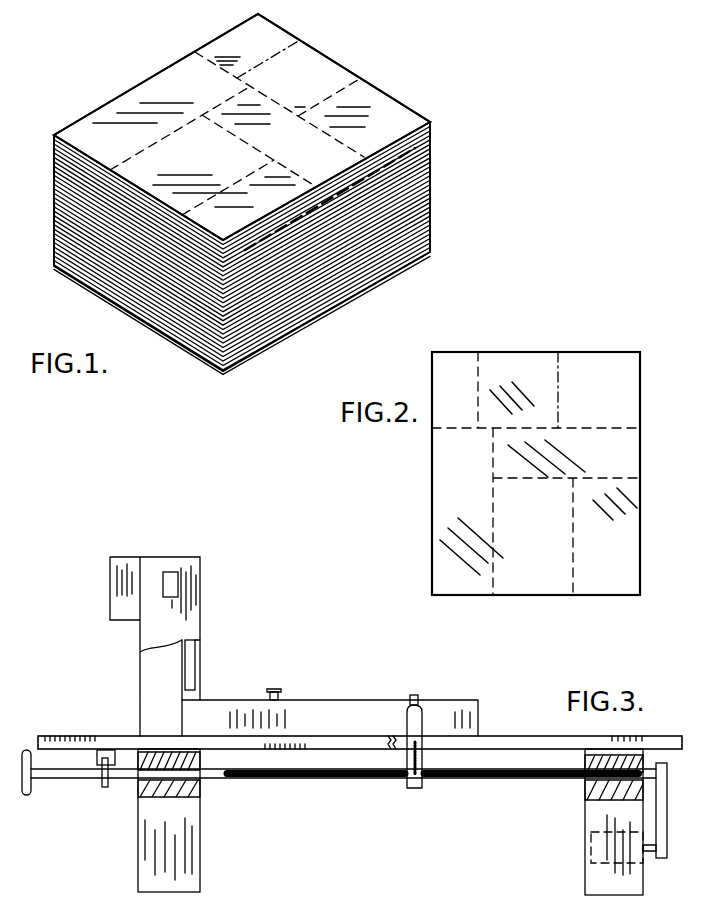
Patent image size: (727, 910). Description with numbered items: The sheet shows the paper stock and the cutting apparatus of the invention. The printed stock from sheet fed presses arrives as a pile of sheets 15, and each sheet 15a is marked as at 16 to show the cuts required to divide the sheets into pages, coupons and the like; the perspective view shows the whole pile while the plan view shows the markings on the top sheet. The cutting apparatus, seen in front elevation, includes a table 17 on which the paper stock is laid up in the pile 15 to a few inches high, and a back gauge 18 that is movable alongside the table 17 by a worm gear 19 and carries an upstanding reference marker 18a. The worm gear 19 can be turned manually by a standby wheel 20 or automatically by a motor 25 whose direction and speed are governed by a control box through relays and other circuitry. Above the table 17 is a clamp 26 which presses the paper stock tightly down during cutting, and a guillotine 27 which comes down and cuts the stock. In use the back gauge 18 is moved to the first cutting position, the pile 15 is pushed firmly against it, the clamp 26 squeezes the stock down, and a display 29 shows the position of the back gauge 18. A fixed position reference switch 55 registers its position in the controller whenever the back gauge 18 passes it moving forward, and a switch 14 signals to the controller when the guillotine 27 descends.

In FIG. 3, the switch 14 is at (172, 572).
In FIG. 1, the pile of sheets 15 is at (433, 196).
In FIG. 1, the sheet 15a is at (390, 122).
In FIG. 2, the sheet 15a is at (436, 457).
In FIG. 1, the cut markings 16 is at (345, 95).
In FIG. 2, the cut markings 16 is at (612, 428).
In FIG. 3, the table 17 is at (334, 737).
In FIG. 3, the back gauge 18 is at (430, 712).
In FIG. 3, the reference marker 18a is at (413, 699).
In FIG. 3, the worm gear 19 is at (513, 784).
In FIG. 3, the standby wheel 20 is at (28, 797).
In FIG. 3, the motor 25 is at (650, 858).
In FIG. 3, the clamp 26 is at (201, 665).
In FIG. 3, the guillotine 27 is at (180, 675).
In FIG. 3, the display 29 is at (347, 909).
In FIG. 3, the position reference switch 55 is at (278, 692).